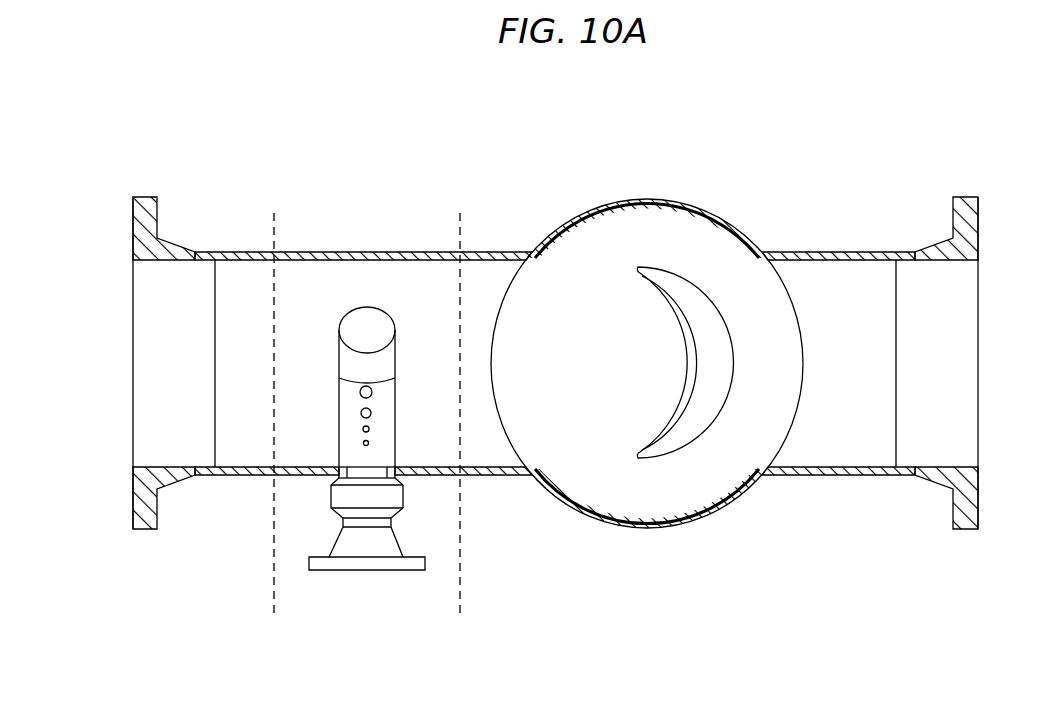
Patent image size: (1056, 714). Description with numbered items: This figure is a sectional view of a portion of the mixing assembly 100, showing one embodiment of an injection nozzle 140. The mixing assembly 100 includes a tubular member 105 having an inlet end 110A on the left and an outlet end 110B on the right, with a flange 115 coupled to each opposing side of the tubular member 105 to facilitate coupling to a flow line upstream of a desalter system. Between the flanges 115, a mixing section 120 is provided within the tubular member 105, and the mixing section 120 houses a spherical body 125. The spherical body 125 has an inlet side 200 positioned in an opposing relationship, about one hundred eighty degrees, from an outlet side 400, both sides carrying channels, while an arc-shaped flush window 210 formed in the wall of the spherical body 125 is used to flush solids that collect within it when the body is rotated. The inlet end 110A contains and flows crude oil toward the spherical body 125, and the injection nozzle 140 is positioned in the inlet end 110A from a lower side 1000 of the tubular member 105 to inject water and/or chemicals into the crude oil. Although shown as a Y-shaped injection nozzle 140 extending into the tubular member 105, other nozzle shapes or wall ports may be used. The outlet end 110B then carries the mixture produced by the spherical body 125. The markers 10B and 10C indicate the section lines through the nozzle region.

The mixing assembly 100 is at (823, 95).
The tubular member 105 is at (294, 156).
The inlet end 110A is at (258, 477).
The outlet end 110B is at (842, 477).
The flange 115 is at (131, 500).
The mixing section 120 is at (687, 171).
The spherical body 125 is at (515, 265).
The injection nozzle 140 is at (365, 605).
The inlet side 200 is at (619, 187).
The flush window 210 is at (708, 355).
The outlet side 400 is at (673, 530).
The lower side 1000 is at (483, 490).
The section line 10B is at (436, 613).
The section line 10C is at (298, 613).